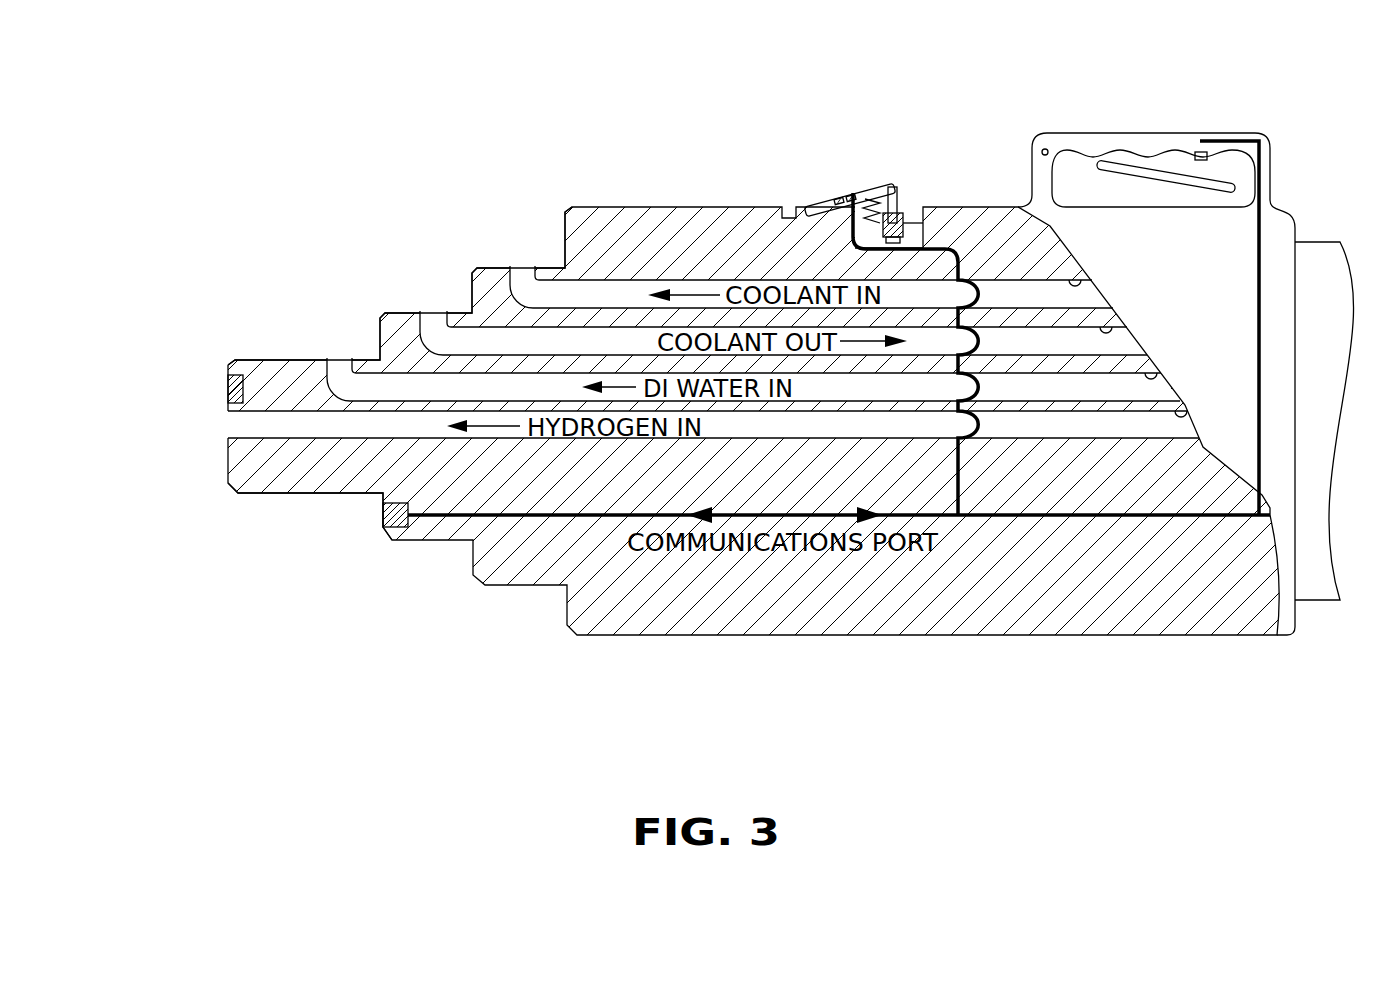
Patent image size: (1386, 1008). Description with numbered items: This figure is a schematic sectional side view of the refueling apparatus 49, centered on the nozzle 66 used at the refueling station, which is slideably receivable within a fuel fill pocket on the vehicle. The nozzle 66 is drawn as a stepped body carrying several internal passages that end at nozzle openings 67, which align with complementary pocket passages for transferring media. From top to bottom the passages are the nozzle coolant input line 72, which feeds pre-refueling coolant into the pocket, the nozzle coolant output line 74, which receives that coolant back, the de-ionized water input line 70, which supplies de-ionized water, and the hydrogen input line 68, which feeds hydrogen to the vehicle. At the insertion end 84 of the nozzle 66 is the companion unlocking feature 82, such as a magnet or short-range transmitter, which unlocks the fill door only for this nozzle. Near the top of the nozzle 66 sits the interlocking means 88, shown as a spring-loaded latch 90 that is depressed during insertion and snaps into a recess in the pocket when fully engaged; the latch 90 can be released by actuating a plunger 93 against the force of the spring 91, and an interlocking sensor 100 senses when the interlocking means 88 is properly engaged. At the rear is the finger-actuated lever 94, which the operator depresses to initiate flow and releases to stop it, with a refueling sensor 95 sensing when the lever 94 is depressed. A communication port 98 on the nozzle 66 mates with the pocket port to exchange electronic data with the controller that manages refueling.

The refueling apparatus 49 is at (602, 80).
The nozzle 66 is at (703, 220).
The nozzle openings 67 is at (339, 359).
The hydrogen input line 68 is at (1187, 421).
The de-ionized water input line 70 is at (1157, 381).
The nozzle coolant input line 72 is at (1081, 288).
The nozzle coolant output line 74 is at (1112, 334).
The companion unlocking feature 82 is at (228, 392).
The insertion end 84 is at (272, 478).
The interlocking means 88 is at (865, 151).
The spring-loaded latch 90 is at (812, 208).
The spring 91 is at (876, 199).
The plunger 93 is at (903, 208).
The finger-actuated lever 94 is at (1138, 175).
The refueling sensor 95 is at (1196, 151).
The communication port 98 is at (397, 521).
The interlocking sensor 100 is at (850, 201).